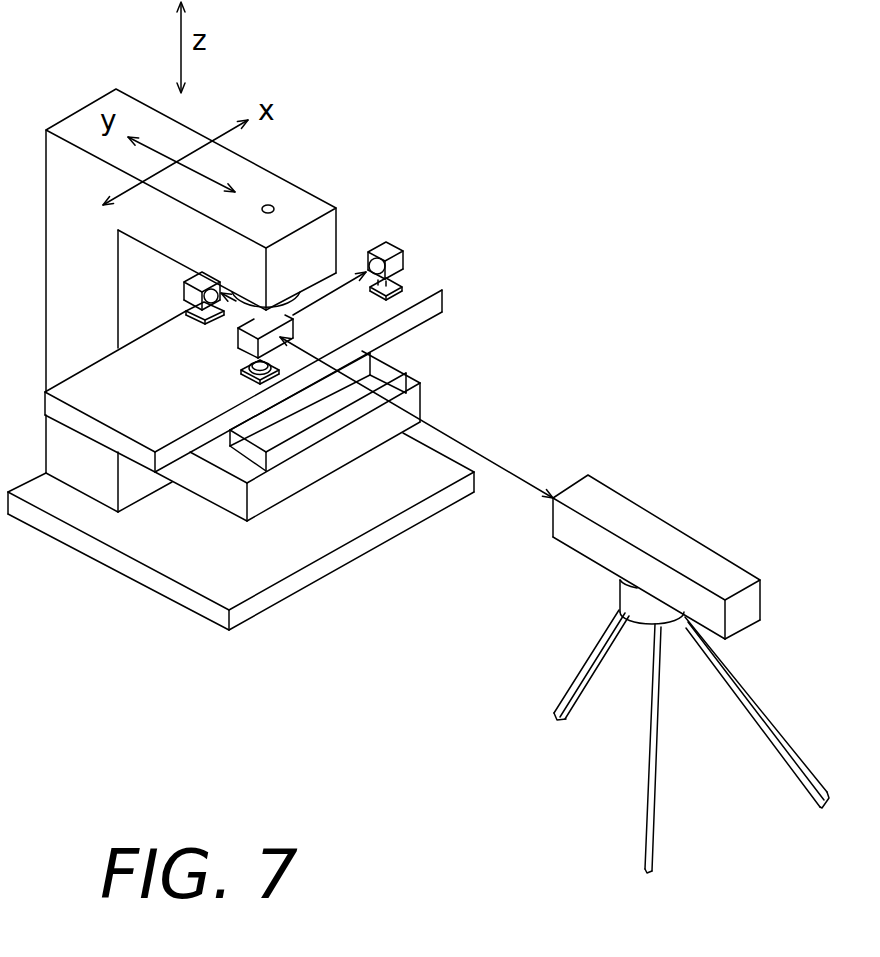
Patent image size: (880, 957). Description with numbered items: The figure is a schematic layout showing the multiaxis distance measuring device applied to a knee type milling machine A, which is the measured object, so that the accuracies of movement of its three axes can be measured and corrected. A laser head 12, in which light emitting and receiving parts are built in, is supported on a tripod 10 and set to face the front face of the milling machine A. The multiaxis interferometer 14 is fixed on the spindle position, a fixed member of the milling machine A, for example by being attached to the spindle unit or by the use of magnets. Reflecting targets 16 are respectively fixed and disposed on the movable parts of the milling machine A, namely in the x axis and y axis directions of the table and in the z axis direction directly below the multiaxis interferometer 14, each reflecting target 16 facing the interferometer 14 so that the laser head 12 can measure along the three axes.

The milling machine A is at (290, 180).
The tripod 10 is at (582, 667).
The laser head 12 is at (657, 537).
The multiaxis interferometer 14 is at (238, 334).
The reflecting targets 16 is at (183, 290).